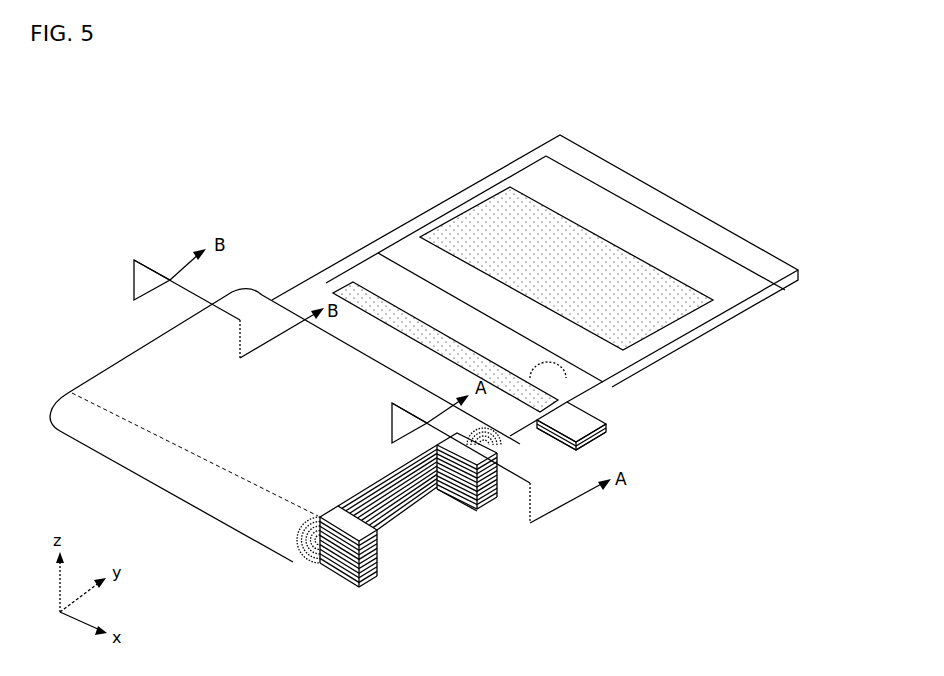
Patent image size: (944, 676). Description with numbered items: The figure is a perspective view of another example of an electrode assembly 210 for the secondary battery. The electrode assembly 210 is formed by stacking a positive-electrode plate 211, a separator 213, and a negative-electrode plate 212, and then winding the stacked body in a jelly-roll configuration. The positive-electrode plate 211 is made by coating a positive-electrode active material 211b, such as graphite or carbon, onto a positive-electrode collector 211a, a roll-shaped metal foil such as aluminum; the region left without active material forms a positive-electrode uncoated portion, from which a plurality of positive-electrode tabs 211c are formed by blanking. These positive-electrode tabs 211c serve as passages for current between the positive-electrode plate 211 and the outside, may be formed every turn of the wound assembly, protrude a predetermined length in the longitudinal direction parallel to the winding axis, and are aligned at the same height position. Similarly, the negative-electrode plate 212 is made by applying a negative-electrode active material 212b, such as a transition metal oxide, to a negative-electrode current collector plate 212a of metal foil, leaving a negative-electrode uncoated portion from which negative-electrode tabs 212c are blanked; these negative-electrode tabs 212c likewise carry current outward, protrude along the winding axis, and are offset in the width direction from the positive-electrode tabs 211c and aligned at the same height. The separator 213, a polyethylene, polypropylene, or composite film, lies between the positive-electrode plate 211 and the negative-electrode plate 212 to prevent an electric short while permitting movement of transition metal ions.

The electrode assembly 210 is at (718, 178).
The positive-electrode plate 211 is at (603, 473).
The positive-electrode collector 211a is at (610, 392).
The positive-electrode active material 211b is at (613, 380).
The positive-electrode tab 211c is at (617, 417).
The negative-electrode plate 212 is at (717, 310).
The negative-electrode current collector plate 212a is at (733, 284).
The negative-electrode active material 212b is at (687, 323).
The negative-electrode tab 212c is at (377, 580).
The separator 213 is at (548, 150).